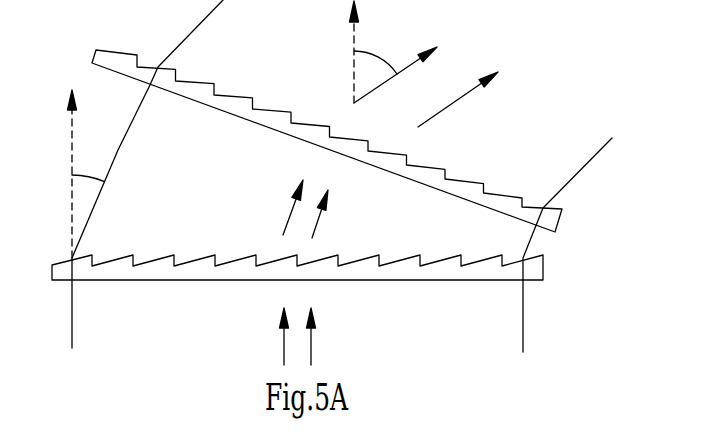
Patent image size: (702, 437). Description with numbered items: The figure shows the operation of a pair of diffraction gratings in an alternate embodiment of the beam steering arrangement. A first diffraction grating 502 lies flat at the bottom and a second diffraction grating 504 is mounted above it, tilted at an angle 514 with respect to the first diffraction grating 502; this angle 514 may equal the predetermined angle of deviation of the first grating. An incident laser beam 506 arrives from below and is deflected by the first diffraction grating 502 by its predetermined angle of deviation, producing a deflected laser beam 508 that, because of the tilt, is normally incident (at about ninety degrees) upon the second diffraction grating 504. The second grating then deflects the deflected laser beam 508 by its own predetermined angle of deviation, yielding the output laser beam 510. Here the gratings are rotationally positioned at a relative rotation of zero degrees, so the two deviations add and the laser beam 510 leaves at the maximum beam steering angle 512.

The first diffraction grating 502 is at (543, 268).
The second diffraction grating 504 is at (561, 216).
The incident laser beam 506 is at (283, 348).
The deflected laser beam 508 is at (288, 222).
The laser beam 510 is at (458, 100).
The maximum beam steering angle 512 is at (388, 62).
The angle 514 is at (80, 205).